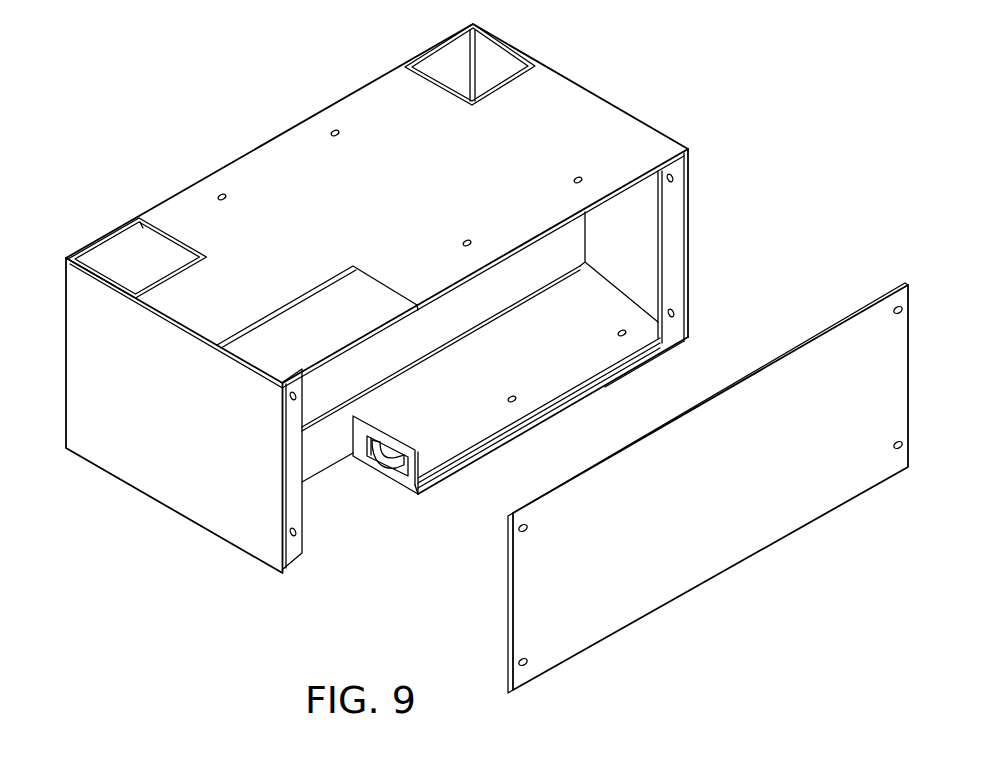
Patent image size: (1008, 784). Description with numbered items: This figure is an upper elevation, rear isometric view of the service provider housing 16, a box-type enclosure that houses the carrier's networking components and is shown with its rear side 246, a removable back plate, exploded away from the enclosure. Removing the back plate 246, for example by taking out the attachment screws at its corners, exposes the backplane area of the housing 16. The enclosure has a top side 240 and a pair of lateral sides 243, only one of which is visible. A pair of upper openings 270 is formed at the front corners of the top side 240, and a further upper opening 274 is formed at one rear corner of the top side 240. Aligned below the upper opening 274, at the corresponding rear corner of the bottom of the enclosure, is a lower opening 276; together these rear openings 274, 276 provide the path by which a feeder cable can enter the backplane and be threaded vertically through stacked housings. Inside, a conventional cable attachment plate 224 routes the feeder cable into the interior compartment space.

The service provider housing 16 is at (162, 99).
The top side 240 is at (632, 142).
The upper openings 270 is at (120, 253).
The upper opening 274 is at (296, 298).
The lateral sides 243 is at (183, 428).
The cable attachment plate 224 is at (484, 423).
The lower opening 276 is at (330, 492).
The rear side 246 is at (740, 503).